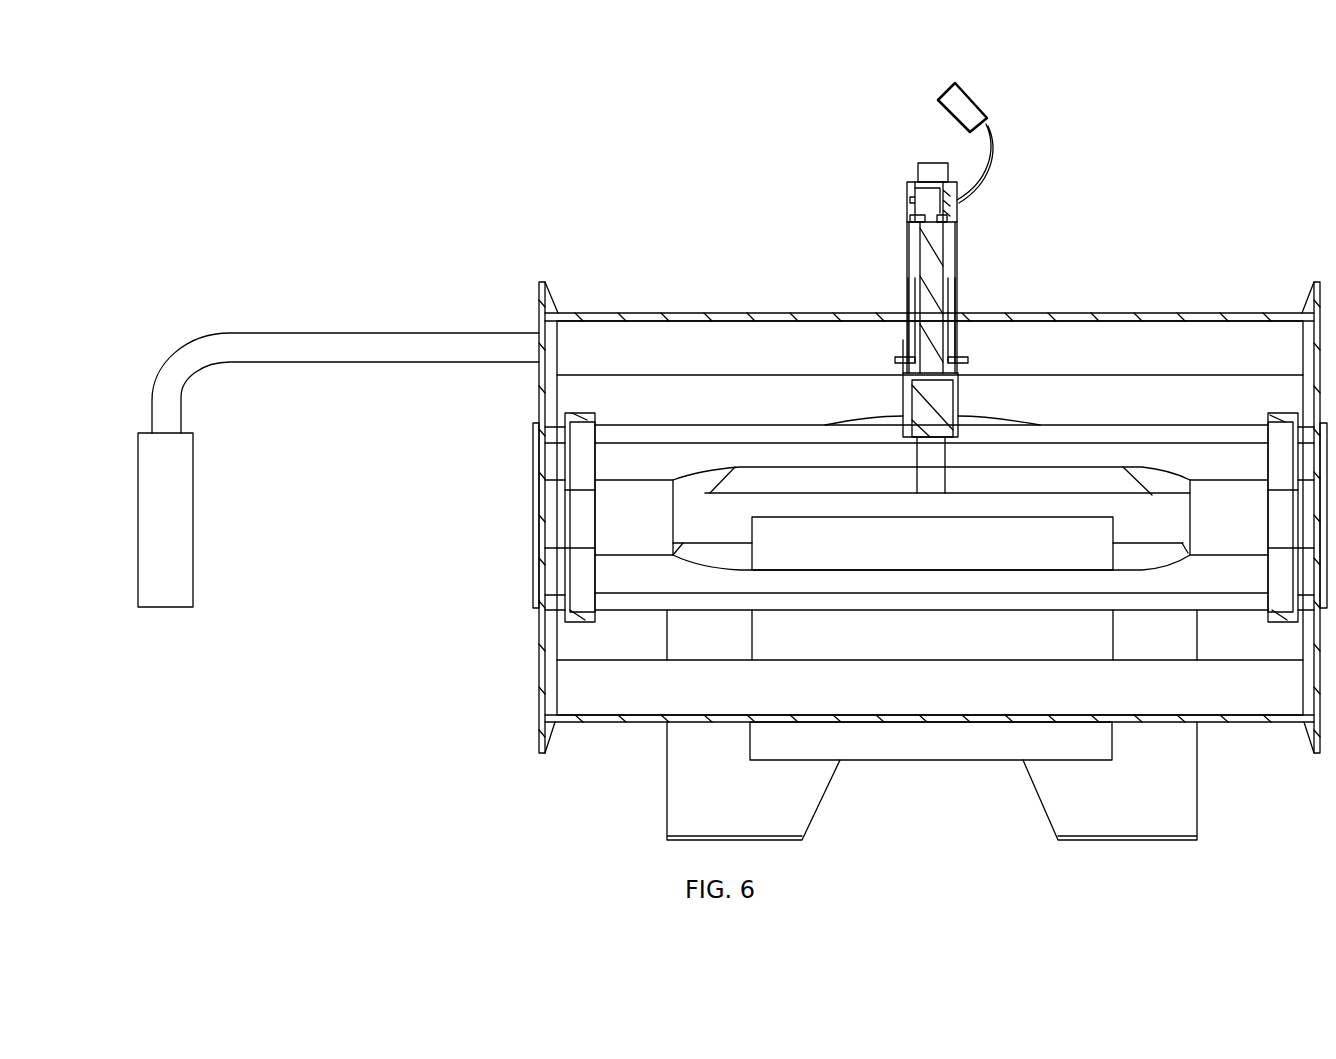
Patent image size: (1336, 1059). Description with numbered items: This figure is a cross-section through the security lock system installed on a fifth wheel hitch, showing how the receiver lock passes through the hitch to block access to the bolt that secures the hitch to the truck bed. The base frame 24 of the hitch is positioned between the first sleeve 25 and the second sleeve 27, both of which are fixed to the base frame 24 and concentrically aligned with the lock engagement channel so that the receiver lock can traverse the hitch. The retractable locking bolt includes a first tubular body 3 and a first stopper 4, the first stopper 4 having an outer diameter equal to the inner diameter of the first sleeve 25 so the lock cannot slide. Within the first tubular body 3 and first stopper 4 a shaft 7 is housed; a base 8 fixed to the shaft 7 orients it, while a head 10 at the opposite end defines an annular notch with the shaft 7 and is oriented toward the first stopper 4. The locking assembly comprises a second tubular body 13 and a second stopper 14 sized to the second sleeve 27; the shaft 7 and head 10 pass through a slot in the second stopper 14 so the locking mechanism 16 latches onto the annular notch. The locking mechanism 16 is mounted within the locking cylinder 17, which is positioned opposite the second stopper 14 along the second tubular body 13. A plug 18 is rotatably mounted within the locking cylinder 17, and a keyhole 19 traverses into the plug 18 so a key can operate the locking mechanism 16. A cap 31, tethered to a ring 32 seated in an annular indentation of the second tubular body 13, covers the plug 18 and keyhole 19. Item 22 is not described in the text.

The first tubular body 3 is at (953, 378).
The first stopper 4 is at (948, 325).
The shaft 7 is at (920, 262).
The base 8 is at (927, 440).
The head 10 is at (910, 220).
The second tubular body 13 is at (955, 267).
The second stopper 14 is at (948, 310).
The locking mechanism 16 is at (957, 222).
The locking cylinder 17 is at (908, 195).
The plug 18 is at (947, 177).
The keyhole 19 is at (933, 173).
The motor housing 22 is at (520, 318).
The base frame 24 is at (622, 313).
The first sleeve 25 is at (900, 332).
The second sleeve 27 is at (908, 310).
The cap 31 is at (938, 100).
The ring 32 is at (910, 200).